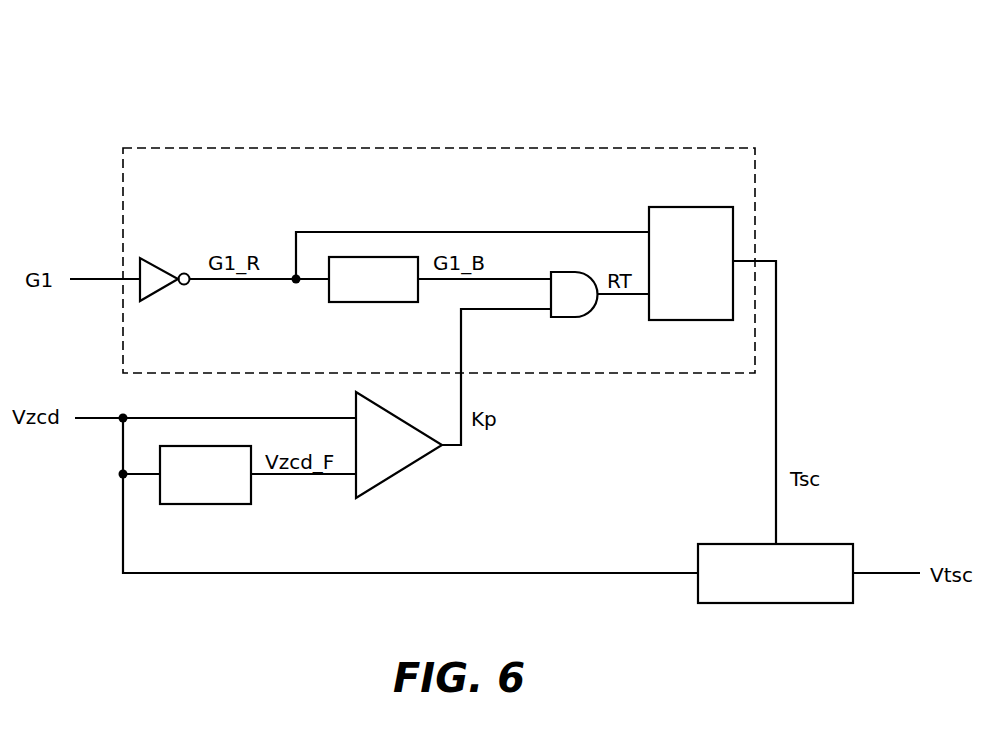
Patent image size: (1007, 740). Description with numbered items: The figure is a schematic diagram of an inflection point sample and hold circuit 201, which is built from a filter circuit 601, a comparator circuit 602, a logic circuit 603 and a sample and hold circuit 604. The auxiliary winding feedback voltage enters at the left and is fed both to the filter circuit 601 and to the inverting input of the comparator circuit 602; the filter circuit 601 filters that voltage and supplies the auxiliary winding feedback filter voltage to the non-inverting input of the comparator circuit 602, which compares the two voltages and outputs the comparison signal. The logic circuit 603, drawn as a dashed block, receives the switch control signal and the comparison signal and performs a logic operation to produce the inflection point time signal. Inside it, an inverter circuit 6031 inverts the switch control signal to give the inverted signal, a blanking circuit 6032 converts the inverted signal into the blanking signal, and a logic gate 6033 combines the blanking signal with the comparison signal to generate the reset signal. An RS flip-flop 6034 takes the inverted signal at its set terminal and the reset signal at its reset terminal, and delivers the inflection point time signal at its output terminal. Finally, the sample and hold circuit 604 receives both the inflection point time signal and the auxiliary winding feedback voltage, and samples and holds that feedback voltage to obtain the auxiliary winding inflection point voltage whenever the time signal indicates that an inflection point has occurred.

The inflection point sample and hold circuit 201 is at (880, 78).
The logic circuit 603 is at (123, 164).
The inverter circuit 6031 is at (165, 246).
The blanking circuit 6032 is at (373, 279).
The logic gate 6033 is at (572, 318).
The RS flip-flop 6034 is at (692, 207).
The filter circuit 601 is at (205, 475).
The comparator circuit 602 is at (399, 445).
The sample and hold circuit 604 is at (775, 573).